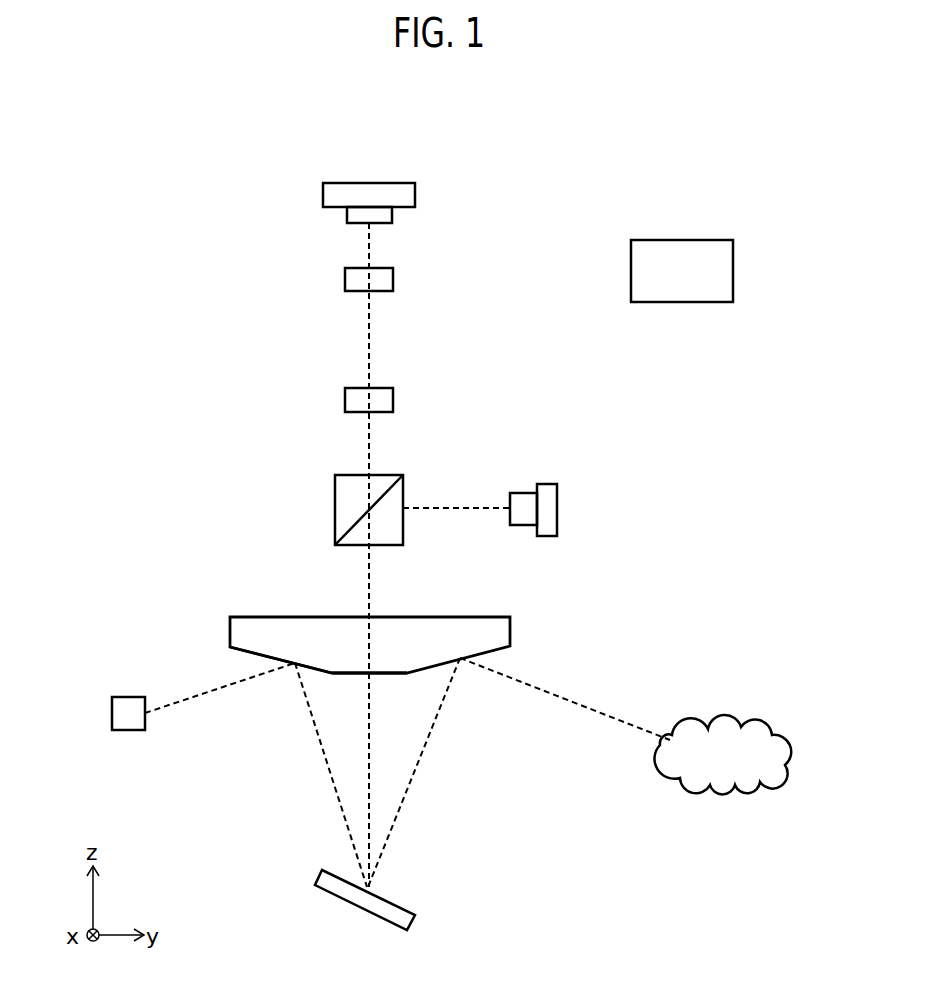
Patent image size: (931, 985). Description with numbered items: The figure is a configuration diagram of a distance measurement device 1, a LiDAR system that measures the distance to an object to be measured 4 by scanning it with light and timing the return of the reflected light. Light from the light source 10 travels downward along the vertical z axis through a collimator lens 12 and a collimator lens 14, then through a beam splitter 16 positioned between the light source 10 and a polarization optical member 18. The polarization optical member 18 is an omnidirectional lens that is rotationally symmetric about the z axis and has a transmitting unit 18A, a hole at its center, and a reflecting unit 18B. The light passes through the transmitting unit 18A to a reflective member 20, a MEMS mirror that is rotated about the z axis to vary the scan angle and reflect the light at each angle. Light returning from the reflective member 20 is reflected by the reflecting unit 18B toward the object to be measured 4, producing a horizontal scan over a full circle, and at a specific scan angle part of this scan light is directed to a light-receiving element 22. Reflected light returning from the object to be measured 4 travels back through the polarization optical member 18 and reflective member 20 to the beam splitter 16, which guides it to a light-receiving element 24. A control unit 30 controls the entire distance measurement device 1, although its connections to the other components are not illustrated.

The distance measurement device 1 is at (722, 147).
The object to be measured 4 is at (758, 717).
The light source 10 is at (323, 190).
The collimator lens 12 is at (345, 277).
The collimator lens 14 is at (345, 398).
The beam splitter 16 is at (335, 497).
The polarization optical member 18 is at (230, 620).
The transmitting unit 18A is at (338, 652).
The reflecting unit 18B is at (258, 653).
The reflective member 20 is at (334, 895).
The light-receiving element 22 is at (122, 697).
The light-receiving element 24 is at (547, 484).
The control unit 30 is at (710, 240).